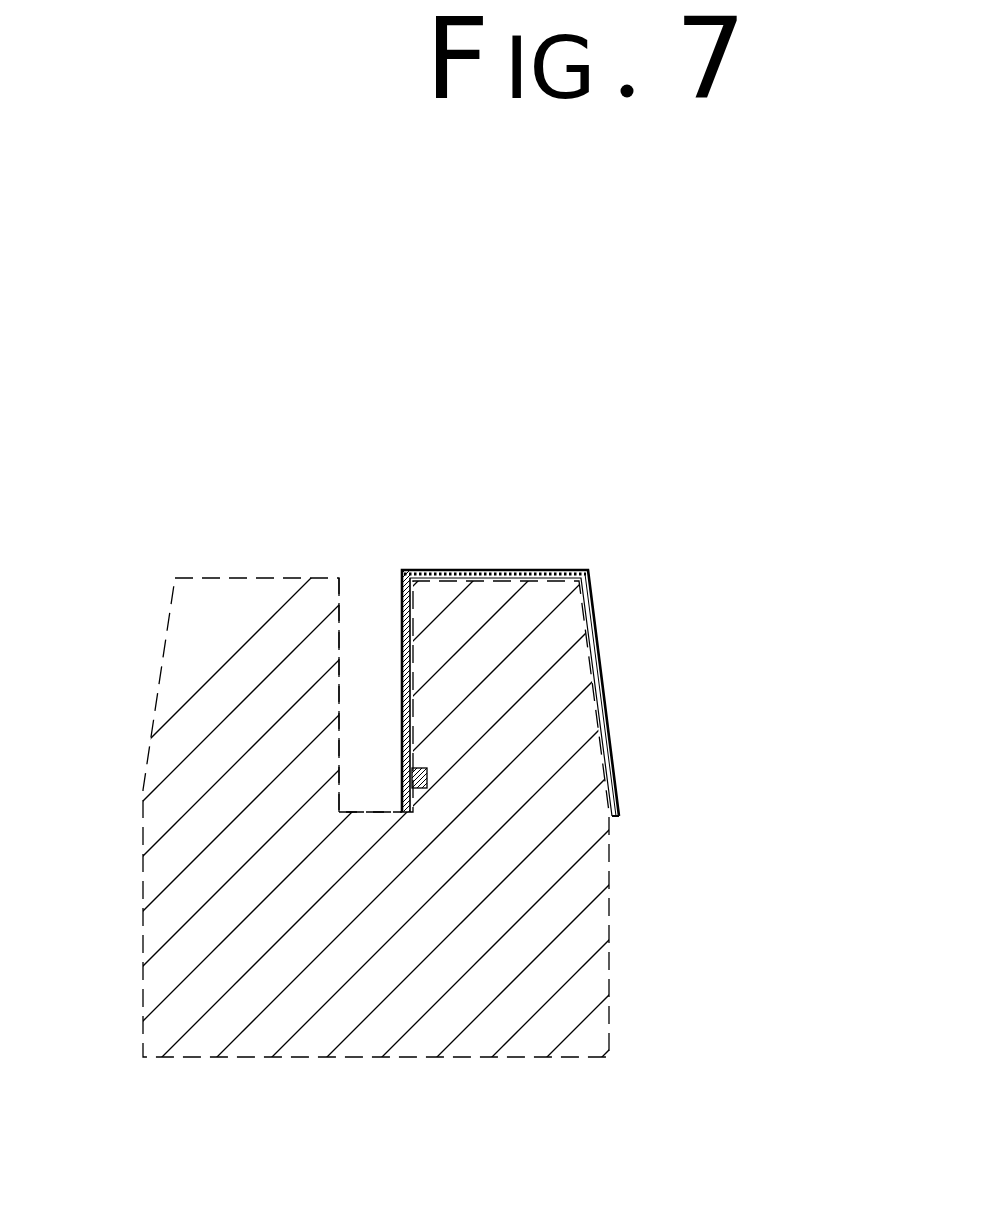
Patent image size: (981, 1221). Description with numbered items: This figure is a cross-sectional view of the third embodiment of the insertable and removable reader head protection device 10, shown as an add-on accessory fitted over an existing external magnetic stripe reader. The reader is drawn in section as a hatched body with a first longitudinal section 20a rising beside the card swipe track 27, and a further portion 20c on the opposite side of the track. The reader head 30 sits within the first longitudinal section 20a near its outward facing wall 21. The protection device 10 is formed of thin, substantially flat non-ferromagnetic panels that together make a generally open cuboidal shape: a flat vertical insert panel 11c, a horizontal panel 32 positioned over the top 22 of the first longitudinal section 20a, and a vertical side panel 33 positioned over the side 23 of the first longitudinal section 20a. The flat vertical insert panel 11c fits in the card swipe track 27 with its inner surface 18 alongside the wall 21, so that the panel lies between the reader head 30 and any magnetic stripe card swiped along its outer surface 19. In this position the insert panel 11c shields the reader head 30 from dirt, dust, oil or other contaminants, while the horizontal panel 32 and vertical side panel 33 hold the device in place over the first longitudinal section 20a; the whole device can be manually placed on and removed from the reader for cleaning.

The insertable and removable reader head protection device 10 is at (400, 895).
The flat vertical insert panel 11c is at (402, 740).
The inner surface 18 is at (402, 672).
The outer surface 19 is at (402, 672).
The first longitudinal section 20a is at (590, 527).
The side portion 20c is at (185, 553).
The wall 21 is at (435, 570).
The top 22 is at (485, 571).
The side 23 is at (610, 875).
The card swipe track 27 is at (353, 600).
The reader head 30 is at (413, 766).
The horizontal panel 32 is at (517, 571).
The vertical side panel 33 is at (592, 628).